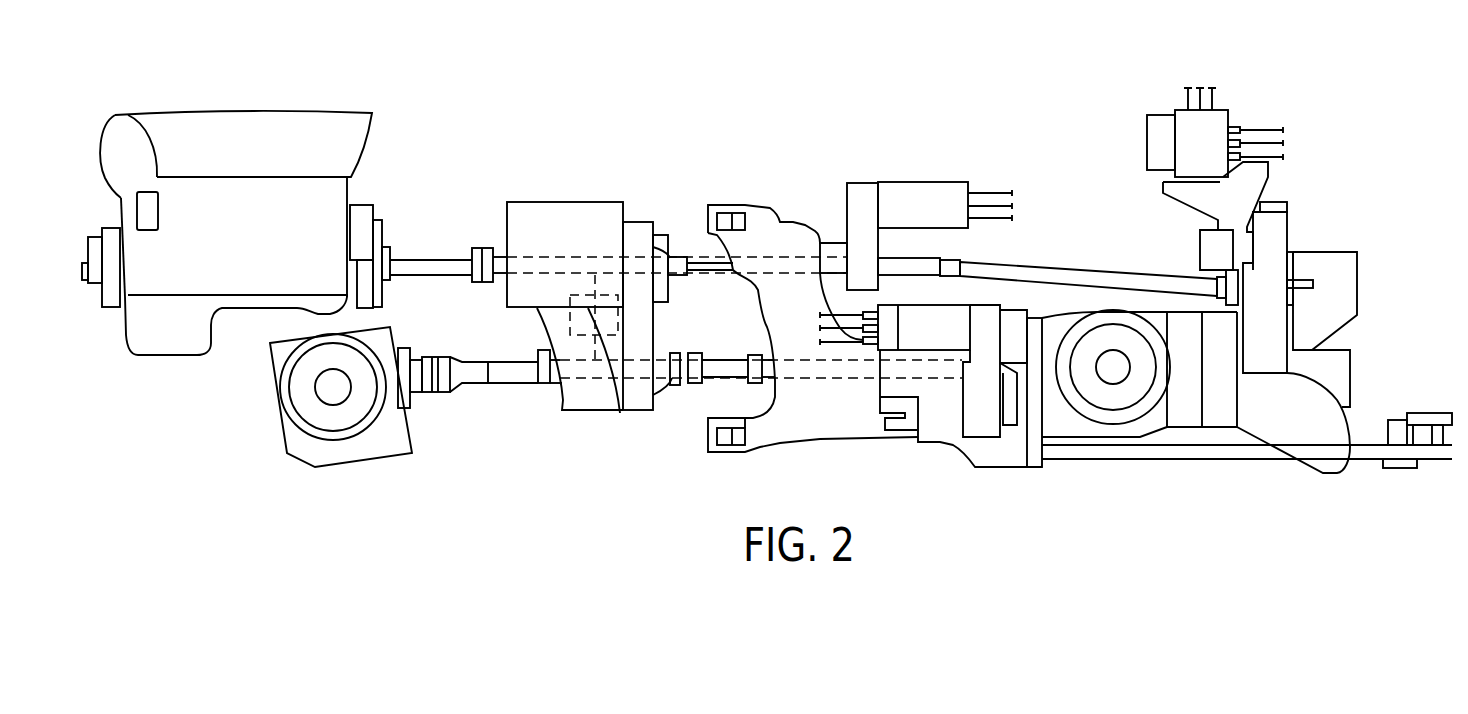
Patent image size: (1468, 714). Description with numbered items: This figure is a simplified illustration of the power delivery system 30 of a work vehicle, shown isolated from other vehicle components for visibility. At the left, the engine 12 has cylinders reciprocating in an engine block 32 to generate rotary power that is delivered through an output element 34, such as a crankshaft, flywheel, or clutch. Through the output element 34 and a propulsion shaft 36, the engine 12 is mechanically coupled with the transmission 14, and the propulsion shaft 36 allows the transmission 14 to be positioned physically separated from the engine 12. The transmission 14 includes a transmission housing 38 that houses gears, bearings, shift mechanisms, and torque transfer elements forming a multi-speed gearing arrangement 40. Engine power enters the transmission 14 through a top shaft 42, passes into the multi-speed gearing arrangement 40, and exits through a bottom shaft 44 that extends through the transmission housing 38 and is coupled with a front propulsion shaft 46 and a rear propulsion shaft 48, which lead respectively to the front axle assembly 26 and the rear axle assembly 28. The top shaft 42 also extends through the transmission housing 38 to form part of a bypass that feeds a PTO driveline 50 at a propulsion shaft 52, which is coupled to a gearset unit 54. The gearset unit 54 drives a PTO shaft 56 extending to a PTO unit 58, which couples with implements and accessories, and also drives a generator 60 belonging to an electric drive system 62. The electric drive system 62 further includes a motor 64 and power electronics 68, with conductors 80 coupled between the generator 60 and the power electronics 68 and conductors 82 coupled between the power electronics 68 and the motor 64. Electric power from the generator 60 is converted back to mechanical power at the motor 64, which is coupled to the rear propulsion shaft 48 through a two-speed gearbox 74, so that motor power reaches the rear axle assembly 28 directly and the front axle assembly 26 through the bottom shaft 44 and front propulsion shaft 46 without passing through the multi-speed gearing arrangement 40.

The engine 12 is at (115, 115).
The transmission 14 is at (570, 198).
The front axle assembly 26 is at (320, 418).
The rear axle assembly 28 is at (1127, 392).
The power delivery system 30 is at (759, 104).
The engine block 32 is at (257, 268).
The output element 34 is at (382, 225).
The propulsion shaft 36 is at (435, 253).
The transmission housing 38 is at (583, 412).
The multi-speed gearing arrangement 40 is at (620, 413).
The top shaft 42 is at (500, 257).
The bottom shaft 44 is at (557, 372).
The front propulsion shaft 46 is at (487, 378).
The rear propulsion shaft 48 is at (723, 378).
The PTO driveline 50 is at (702, 256).
The propulsion shaft 52 is at (717, 267).
The gearset unit 54 is at (847, 200).
The PTO shaft 56 is at (1048, 263).
The PTO unit 58 is at (1273, 273).
The generator 60 is at (912, 182).
The electric drive system 62 is at (1156, 95).
The motor 64 is at (943, 305).
The power electronics 68 is at (1225, 108).
The gearbox 74 is at (982, 422).
The conductors 80 is at (1275, 130).
The conductors 82 is at (843, 340).